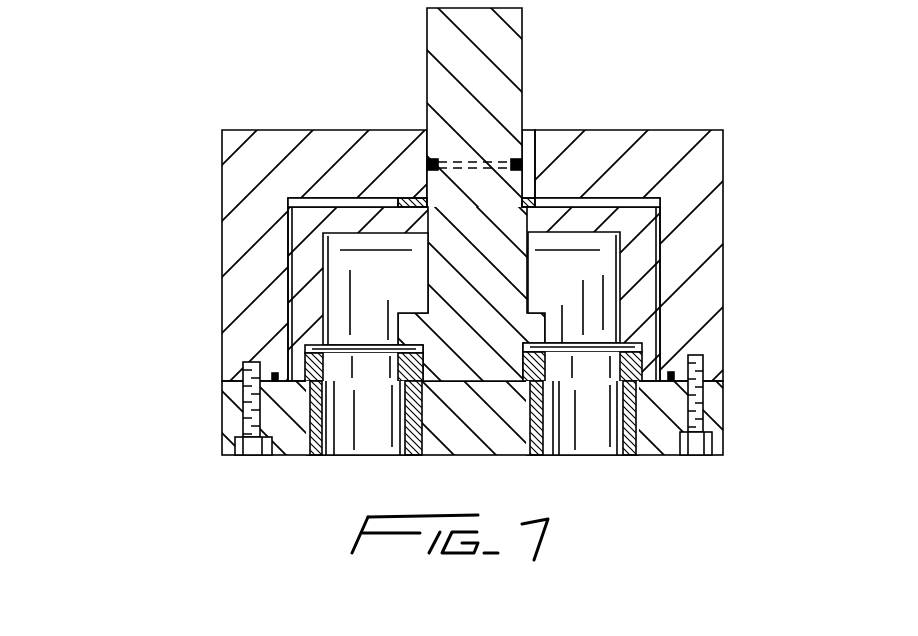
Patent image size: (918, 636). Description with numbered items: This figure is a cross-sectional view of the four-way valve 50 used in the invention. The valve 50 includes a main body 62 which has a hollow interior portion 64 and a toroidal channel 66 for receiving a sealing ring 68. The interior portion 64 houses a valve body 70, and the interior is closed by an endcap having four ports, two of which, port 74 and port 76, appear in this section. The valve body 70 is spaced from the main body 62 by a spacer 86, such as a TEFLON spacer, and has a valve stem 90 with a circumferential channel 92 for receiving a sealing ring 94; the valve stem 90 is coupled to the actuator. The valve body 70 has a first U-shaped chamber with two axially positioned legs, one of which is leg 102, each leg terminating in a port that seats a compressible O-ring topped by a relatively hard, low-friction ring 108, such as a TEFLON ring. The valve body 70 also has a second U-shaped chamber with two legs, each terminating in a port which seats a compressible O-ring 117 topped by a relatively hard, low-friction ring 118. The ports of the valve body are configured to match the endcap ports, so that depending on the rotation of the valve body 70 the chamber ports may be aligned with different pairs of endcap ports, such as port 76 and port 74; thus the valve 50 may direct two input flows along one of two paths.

The valve 50 is at (150, 265).
The main body 62 is at (723, 216).
The hollow interior portion 64 is at (307, 198).
The toroidal channel 66 is at (272, 365).
The sealing ring 68 is at (242, 402).
The valve body 70 is at (640, 232).
The port 74 is at (628, 458).
The port 76 is at (320, 455).
The spacer 86 is at (535, 197).
The valve stem 90 is at (505, 48).
The circumferential channel 92 is at (511, 160).
The sealing ring 94 is at (426, 160).
The leg 102 is at (348, 268).
The low-friction ring 108 is at (420, 455).
The compressible O-ring 117 is at (690, 288).
The low-friction ring 118 is at (695, 408).